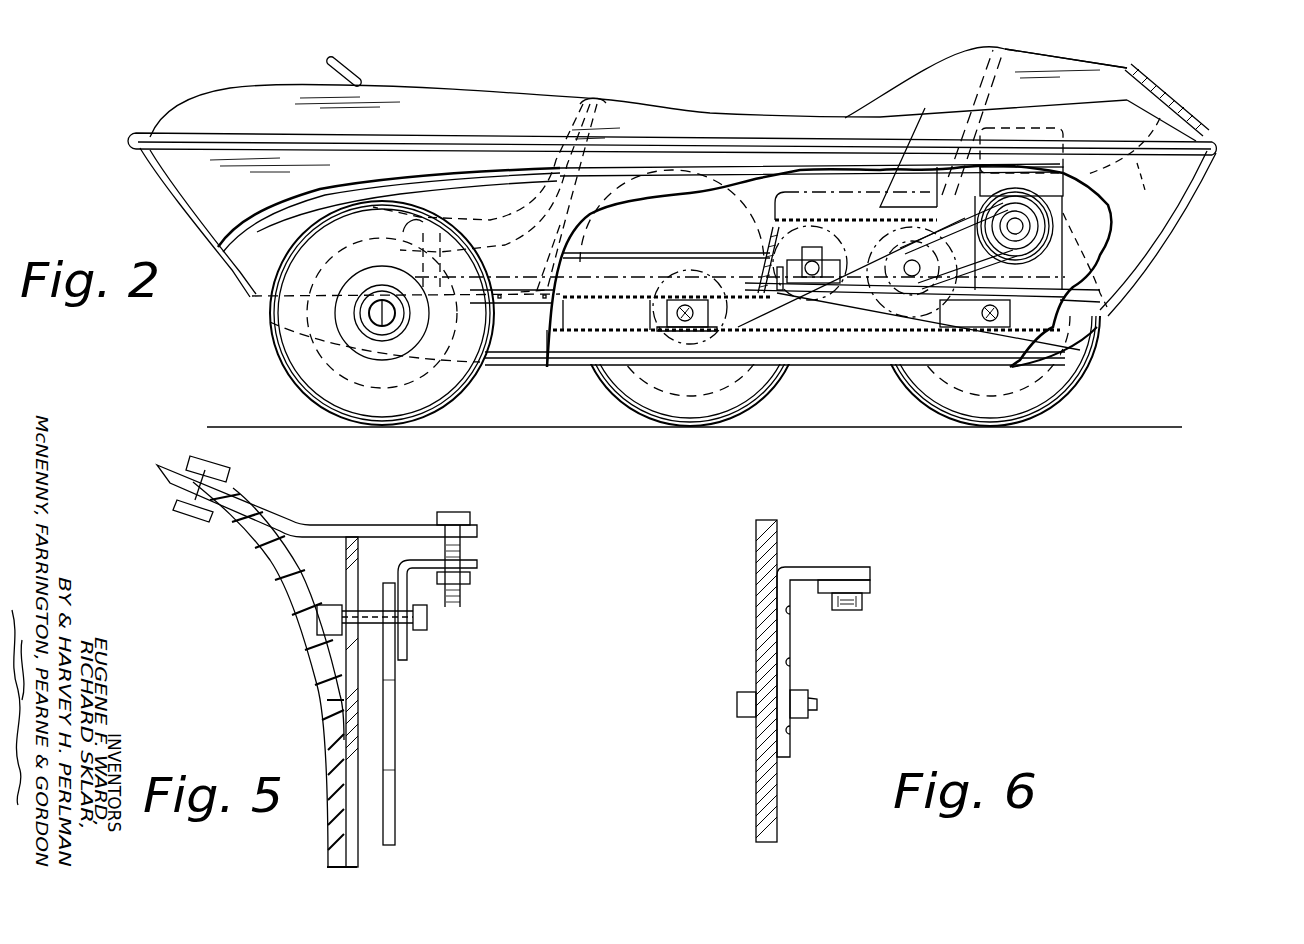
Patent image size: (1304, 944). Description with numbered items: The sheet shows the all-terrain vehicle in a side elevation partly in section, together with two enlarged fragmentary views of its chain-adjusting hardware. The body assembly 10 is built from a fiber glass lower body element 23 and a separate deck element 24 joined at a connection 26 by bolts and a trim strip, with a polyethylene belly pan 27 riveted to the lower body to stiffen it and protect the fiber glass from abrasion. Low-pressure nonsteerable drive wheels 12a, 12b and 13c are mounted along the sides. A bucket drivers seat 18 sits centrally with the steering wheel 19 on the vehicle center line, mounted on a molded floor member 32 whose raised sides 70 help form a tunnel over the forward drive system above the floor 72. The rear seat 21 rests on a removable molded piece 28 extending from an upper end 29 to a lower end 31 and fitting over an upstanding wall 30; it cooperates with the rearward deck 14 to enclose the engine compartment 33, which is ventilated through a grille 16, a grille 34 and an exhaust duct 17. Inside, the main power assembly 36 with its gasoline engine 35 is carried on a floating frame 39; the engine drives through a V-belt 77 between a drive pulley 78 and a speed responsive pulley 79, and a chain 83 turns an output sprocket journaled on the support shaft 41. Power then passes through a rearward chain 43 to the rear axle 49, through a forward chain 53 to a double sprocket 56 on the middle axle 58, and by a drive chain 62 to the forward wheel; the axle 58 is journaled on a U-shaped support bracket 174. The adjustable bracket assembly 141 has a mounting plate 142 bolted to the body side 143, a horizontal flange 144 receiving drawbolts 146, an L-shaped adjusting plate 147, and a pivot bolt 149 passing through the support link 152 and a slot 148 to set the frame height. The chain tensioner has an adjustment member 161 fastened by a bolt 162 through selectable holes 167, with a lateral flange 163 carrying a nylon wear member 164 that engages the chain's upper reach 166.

In FIG. 2, the body assembly 10 is at (160, 185).
In FIG. 2, the rearward drive wheel 12a is at (1075, 387).
In FIG. 2, the middle drive wheel 12b is at (608, 380).
In FIG. 2, the forward drive wheel 13c is at (292, 375).
In FIG. 2, the rearward deck 14 is at (1085, 63).
In FIG. 2, the grille 16 is at (1150, 80).
In FIG. 2, the duct 17 is at (1125, 163).
In FIG. 2, the drivers seat 18 is at (590, 100).
In FIG. 2, the steering wheel 19 is at (343, 72).
In FIG. 2, the rear seat 21 is at (980, 55).
In FIG. 2, the lower body element 23 is at (1157, 262).
In FIG. 6, the lower body element 23 is at (755, 544).
In FIG. 2, the deck element 24 is at (475, 91).
In FIG. 2, the connection 26 is at (1222, 148).
In FIG. 2, the belly pan 27 is at (1083, 333).
In FIG. 2, the molded plastic piece 28 is at (878, 255).
In FIG. 2, the upper end 29 is at (995, 50).
In FIG. 2, the upstanding wall 30 is at (775, 232).
In FIG. 2, the lower end 31 is at (805, 266).
In FIG. 2, the floor member 32 is at (615, 293).
In FIG. 2, the engine compartment 33 is at (1070, 257).
In FIG. 2, the grille 34 is at (768, 246).
In FIG. 2, the gasoline engine 35 is at (1010, 300).
In FIG. 2, the main power assembly 36 is at (1075, 270).
In FIG. 2, the floating frame 39 is at (1103, 300).
In FIG. 2, the support shaft 41 is at (812, 293).
In FIG. 2, the rearwardly extending chain 43 is at (775, 351).
In FIG. 2, the axle 49 is at (990, 321).
In FIG. 2, the forwardly extending chain 53 is at (775, 348).
In FIG. 2, the double sprocket 56 is at (652, 310).
In FIG. 2, the axle 58 is at (686, 323).
In FIG. 2, the drive chain 62 is at (547, 345).
In FIG. 2, the raised sides 70 is at (676, 275).
In FIG. 2, the floor 72 is at (548, 332).
In FIG. 2, the flexible drive belt 77 is at (952, 232).
In FIG. 2, the drive pulley 78 is at (928, 326).
In FIG. 2, the speed responsive drive pulley 79 is at (1020, 196).
In FIG. 2, the chain 83 is at (845, 245).
In FIG. 2, the support link 152 is at (805, 248).
In FIG. 5, the support link 152 is at (397, 728).
In FIG. 2, the U-shaped support bracket 174 is at (806, 340).
In FIG. 5, the adjustable bracket assembly 141 is at (480, 512).
In FIG. 5, the mounting plate member 142 is at (325, 718).
In FIG. 5, the side 143 is at (275, 580).
In FIG. 6, the side 143 is at (756, 605).
In FIG. 5, the horizontal flange 144 is at (372, 522).
In FIG. 5, the drawbolts 146 is at (452, 511).
In FIG. 5, the L-shaped adjusting plate 147 is at (480, 564).
In FIG. 5, the slot 148 is at (348, 575).
In FIG. 5, the pivot bolt 149 is at (428, 626).
In FIG. 6, the adjustment member 161 is at (792, 645).
In FIG. 6, the bolt fastener 162 is at (820, 705).
In FIG. 6, the lateral flange 163 is at (825, 567).
In FIG. 6, the wear member 164 is at (872, 590).
In FIG. 6, the upper reach 166 is at (860, 610).
In FIG. 6, the holes 167 is at (791, 612).